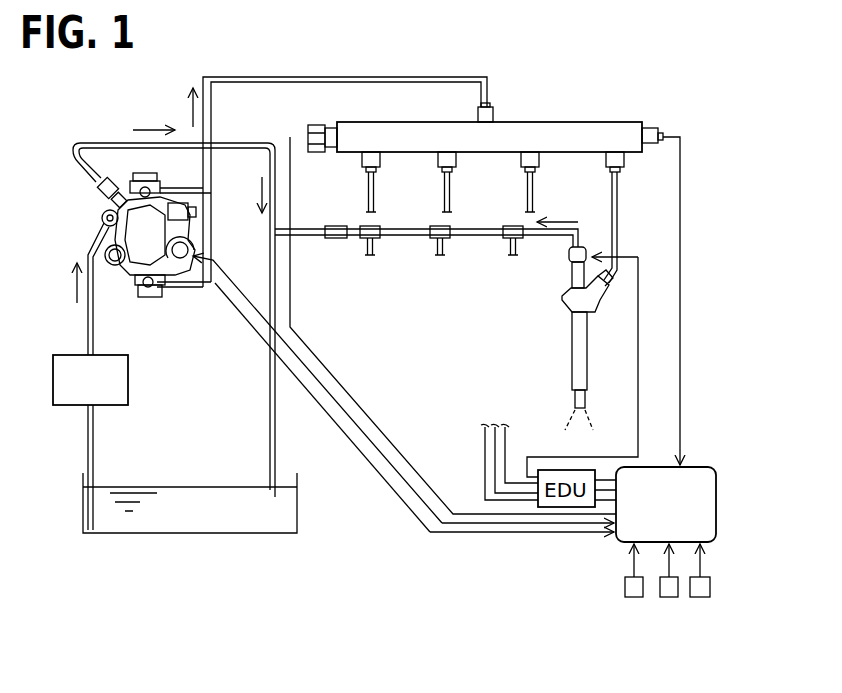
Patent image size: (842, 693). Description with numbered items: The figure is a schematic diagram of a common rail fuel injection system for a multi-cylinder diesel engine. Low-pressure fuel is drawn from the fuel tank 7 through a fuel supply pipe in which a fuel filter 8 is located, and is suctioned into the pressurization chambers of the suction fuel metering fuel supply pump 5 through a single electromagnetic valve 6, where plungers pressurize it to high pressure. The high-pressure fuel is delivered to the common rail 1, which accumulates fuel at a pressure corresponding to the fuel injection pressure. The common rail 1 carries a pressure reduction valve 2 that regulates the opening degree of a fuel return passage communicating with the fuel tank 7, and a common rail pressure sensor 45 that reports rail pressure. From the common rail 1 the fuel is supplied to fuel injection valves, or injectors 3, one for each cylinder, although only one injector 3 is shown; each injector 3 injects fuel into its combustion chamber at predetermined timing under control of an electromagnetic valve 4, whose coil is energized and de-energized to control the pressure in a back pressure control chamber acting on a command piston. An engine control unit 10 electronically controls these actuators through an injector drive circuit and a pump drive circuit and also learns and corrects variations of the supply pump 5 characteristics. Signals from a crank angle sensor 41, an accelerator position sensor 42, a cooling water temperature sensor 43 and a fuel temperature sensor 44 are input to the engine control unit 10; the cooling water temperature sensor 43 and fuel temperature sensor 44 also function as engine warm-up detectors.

The common rail 1 is at (630, 121).
The pressure reduction valve 2 is at (306, 137).
The fuel injection valve (injector) 3 is at (577, 352).
The electromagnetic valve 4 is at (568, 258).
The suction fuel metering fuel supply pump 5 is at (117, 265).
The electromagnetic valve 6 is at (181, 259).
The fuel tank 7 is at (297, 510).
The fuel filter 8 is at (130, 382).
The engine control unit (ECU) 10 is at (718, 503).
The crank angle sensor 41 is at (630, 598).
The accelerator position sensor 42 is at (670, 598).
The cooling water temperature sensor 43 is at (700, 598).
The fuel temperature sensor 44 is at (198, 222).
The common rail pressure sensor 45 is at (652, 126).